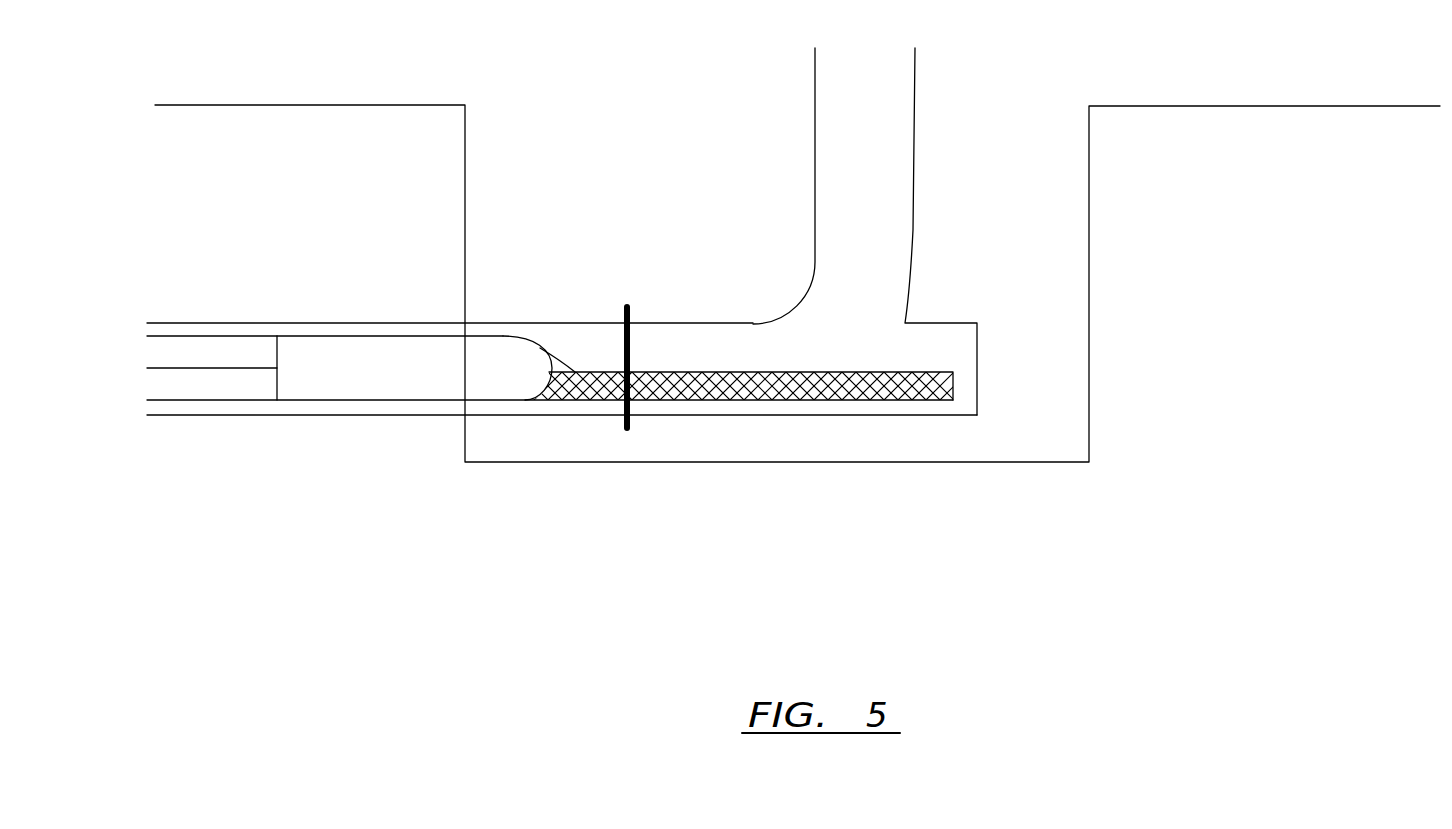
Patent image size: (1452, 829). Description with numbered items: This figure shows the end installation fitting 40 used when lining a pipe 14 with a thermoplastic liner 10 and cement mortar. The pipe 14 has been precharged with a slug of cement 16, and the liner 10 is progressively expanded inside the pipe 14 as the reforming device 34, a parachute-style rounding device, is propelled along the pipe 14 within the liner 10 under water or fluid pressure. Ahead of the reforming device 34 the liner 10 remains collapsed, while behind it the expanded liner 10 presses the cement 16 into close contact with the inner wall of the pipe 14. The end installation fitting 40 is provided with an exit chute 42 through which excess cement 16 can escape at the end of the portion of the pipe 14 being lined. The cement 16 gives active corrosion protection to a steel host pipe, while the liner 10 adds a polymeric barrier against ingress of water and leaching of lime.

The liner 10 is at (250, 337).
The pipe 14 is at (379, 323).
The cement 16 is at (210, 403).
The reforming device 34 is at (415, 382).
The end installation fitting 40 is at (907, 417).
The exit chute 42 is at (813, 148).